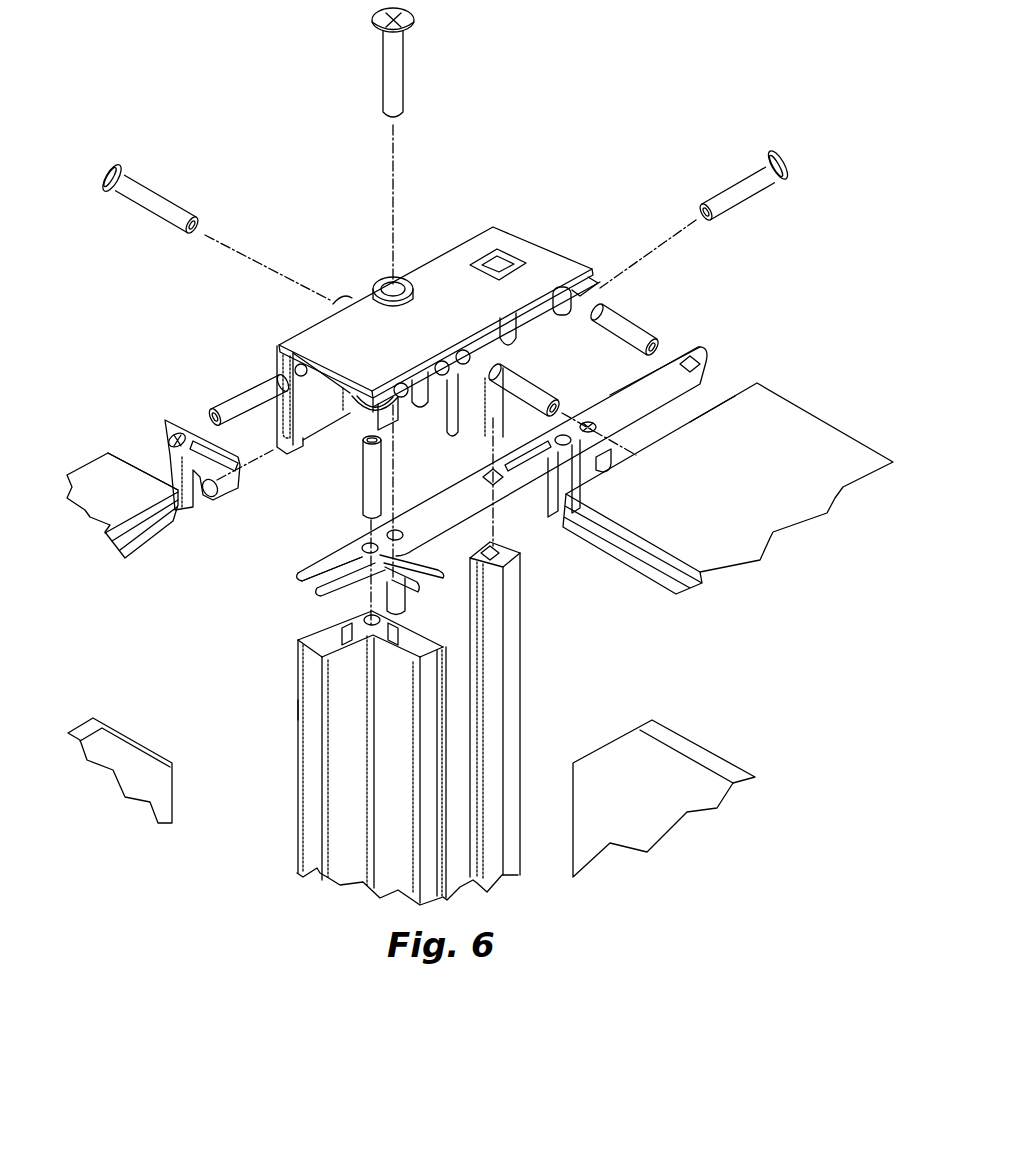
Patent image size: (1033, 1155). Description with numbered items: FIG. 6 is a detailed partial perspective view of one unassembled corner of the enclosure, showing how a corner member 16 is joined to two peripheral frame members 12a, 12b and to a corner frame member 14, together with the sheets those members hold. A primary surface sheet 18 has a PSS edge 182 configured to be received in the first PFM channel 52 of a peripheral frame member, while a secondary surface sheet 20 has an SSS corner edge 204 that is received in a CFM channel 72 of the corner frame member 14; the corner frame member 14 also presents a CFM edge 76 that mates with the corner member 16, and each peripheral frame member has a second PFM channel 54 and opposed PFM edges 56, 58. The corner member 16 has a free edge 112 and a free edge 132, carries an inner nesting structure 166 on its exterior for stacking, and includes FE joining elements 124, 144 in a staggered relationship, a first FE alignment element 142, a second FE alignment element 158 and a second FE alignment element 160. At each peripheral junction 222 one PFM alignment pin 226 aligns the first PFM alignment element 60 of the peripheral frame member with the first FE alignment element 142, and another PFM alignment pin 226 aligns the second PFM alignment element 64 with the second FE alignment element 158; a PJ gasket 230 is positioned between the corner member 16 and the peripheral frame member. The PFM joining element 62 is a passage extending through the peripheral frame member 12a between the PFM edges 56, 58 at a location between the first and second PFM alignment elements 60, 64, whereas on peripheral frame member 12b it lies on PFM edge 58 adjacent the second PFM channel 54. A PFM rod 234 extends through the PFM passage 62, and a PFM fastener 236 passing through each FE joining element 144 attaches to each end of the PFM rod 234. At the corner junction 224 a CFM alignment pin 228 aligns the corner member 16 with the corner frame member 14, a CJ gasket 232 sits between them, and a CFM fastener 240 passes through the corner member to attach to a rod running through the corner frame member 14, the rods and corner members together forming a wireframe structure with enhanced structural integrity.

The peripheral frame member 12a is at (297, 762).
The peripheral frame member 12b is at (778, 402).
The corner frame member 14 is at (76, 462).
The corner member 16 is at (457, 247).
The primary surface sheet 18 is at (656, 797).
The secondary surface sheet 20 is at (146, 776).
The first PFM channel 52 is at (430, 678).
The second PFM channel 54 is at (310, 703).
The PFM edge 56 is at (447, 570).
The PFM edge 58 is at (700, 410).
The first PFM alignment element 60 is at (637, 449).
The PFM joining element 62 is at (420, 615).
The second PFM alignment element 64 is at (508, 548).
The CFM channel 72 is at (150, 528).
The CFM edge 76 is at (138, 452).
The free edge 112 is at (345, 420).
The FE joining element 124 is at (345, 298).
The free edge 132 is at (392, 378).
The first FE alignment element 142 is at (375, 430).
The FE joining element 144 is at (398, 277).
The second FE alignment element 158 is at (285, 372).
The second FE alignment element 160 is at (578, 282).
The inner nesting structure 166 is at (504, 258).
The PSS edge 182 is at (660, 725).
The SSS corner edge 204 is at (112, 730).
The peripheral junction 222 is at (270, 545).
The corner junction 224 is at (168, 404).
The PFM alignment pin 226 is at (364, 485).
The CFM alignment pin 228 is at (247, 402).
The PJ gasket 230 is at (696, 352).
The CJ gasket 232 is at (213, 497).
The PFM rod 234 is at (398, 598).
The PFM fastener 236 is at (405, 82).
The CFM fastener 240 is at (760, 172).